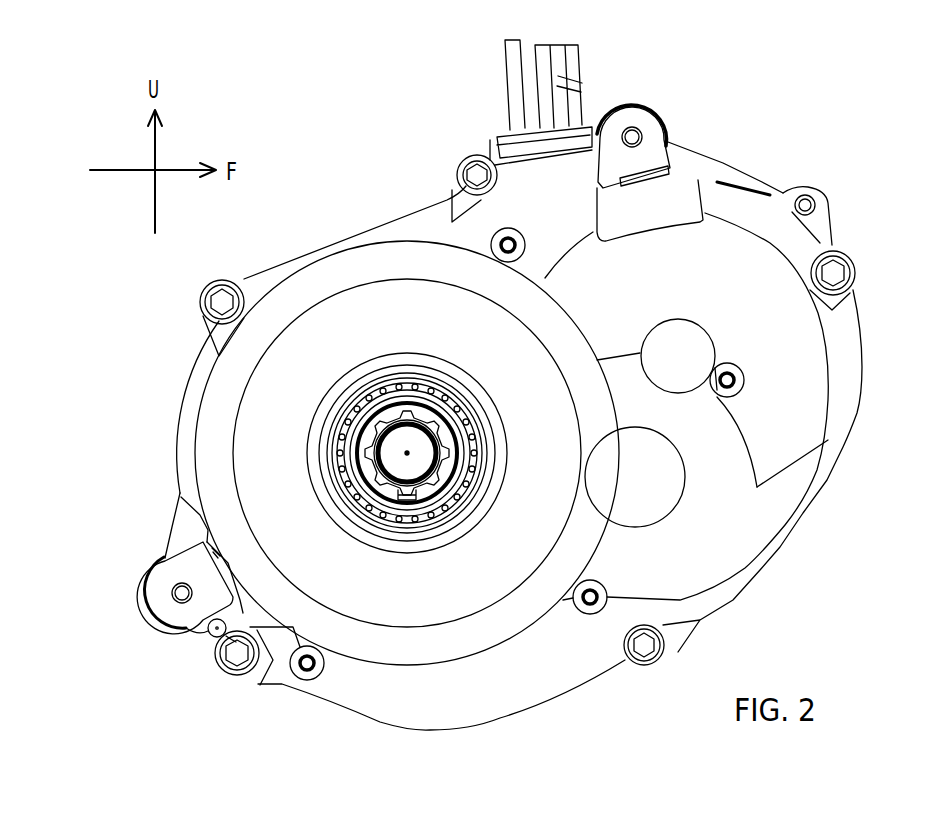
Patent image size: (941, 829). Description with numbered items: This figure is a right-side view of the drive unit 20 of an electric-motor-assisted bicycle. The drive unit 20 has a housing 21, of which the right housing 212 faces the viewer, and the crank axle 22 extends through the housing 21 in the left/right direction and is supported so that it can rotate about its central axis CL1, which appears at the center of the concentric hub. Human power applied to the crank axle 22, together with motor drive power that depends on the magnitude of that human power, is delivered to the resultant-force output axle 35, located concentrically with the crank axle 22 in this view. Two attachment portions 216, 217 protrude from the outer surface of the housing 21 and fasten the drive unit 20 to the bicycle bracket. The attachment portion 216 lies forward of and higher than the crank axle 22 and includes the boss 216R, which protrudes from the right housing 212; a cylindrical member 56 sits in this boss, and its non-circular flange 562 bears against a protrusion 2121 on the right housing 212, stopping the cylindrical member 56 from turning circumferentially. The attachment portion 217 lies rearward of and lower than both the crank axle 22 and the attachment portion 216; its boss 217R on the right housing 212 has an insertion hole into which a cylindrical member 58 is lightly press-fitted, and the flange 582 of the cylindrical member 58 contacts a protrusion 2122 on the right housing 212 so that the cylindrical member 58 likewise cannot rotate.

The drive unit 20 is at (399, 204).
The housing 21 is at (865, 358).
The right housing 212 is at (777, 515).
The protrusion 2121 is at (712, 164).
The protrusion 2122 is at (212, 550).
The attachment portion 216 is at (681, 113).
The boss 216R is at (650, 68).
The cylindrical member 56 is at (650, 100).
The flange 562 is at (660, 160).
The attachment portion 217 is at (170, 642).
The boss 217R is at (148, 606).
The cylindrical member 58 is at (153, 568).
The flange 582 is at (185, 560).
The crank axle 22 is at (447, 487).
The resultant-force output axle 35 is at (413, 518).
The central axis CL1 is at (407, 453).